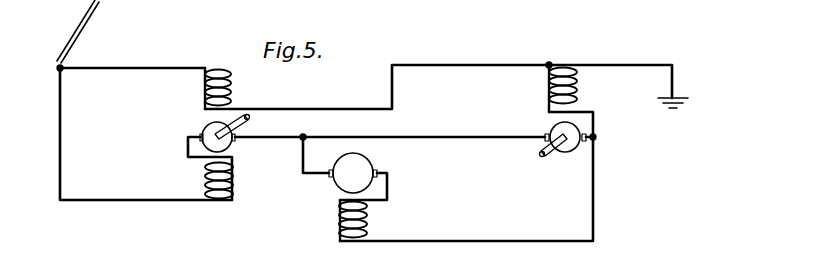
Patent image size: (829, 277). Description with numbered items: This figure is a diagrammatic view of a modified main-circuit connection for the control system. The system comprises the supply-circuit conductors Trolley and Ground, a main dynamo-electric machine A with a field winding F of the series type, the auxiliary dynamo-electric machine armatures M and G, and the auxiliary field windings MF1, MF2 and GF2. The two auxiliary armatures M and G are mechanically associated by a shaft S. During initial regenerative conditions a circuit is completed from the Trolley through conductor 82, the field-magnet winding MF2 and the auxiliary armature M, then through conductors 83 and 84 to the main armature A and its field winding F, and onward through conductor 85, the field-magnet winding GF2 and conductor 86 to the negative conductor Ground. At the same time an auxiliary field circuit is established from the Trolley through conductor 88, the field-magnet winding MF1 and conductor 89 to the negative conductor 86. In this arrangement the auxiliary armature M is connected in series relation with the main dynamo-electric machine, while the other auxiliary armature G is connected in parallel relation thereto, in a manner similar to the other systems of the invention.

The conductor 82 is at (58, 161).
The conductor 83 is at (284, 125).
The conductor 84 is at (302, 163).
The conductor 85 is at (502, 243).
The conductor 86 is at (648, 72).
The conductor 88 is at (163, 70).
The conductor 89 is at (371, 107).
The supply-circuit conductor Trolley is at (128, 31).
The supply-circuit conductor Ground is at (679, 126).
The auxiliary field winding MF1 is at (205, 99).
The auxiliary field winding MF2 is at (205, 193).
The auxiliary dynamo-electric machine armature M is at (219, 134).
The shaft S is at (237, 127).
The auxiliary dynamo-electric machine armature G is at (551, 131).
The auxiliary field winding GF2 is at (549, 89).
The main dynamo-electric machine A is at (358, 176).
The field winding F is at (368, 221).